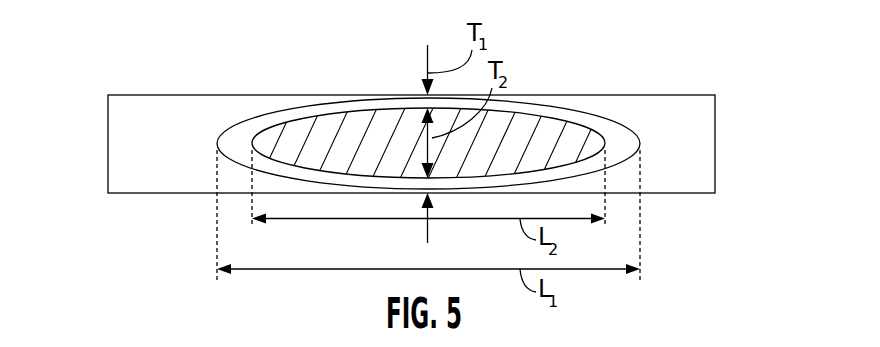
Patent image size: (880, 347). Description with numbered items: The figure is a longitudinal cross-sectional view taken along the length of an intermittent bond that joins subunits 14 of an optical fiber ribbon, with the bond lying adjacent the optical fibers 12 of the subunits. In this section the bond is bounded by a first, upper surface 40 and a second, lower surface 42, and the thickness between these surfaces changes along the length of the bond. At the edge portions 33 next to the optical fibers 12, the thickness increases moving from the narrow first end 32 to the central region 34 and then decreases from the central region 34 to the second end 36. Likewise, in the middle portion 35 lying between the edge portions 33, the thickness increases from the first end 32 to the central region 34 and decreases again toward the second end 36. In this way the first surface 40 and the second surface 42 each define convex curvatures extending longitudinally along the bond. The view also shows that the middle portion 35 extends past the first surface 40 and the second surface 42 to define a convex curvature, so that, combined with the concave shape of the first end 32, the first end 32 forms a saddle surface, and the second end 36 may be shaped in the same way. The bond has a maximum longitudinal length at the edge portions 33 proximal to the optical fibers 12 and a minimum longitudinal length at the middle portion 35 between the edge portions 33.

The optical fiber 12 is at (700, 122).
The subunit 14 is at (662, 53).
The first end 32 is at (219, 139).
The edge portion 33 is at (202, 132).
The central region 34 is at (403, 95).
The middle portion 35 is at (242, 154).
The second end 36 is at (635, 130).
The first surface 40 is at (299, 112).
The second surface 42 is at (333, 176).